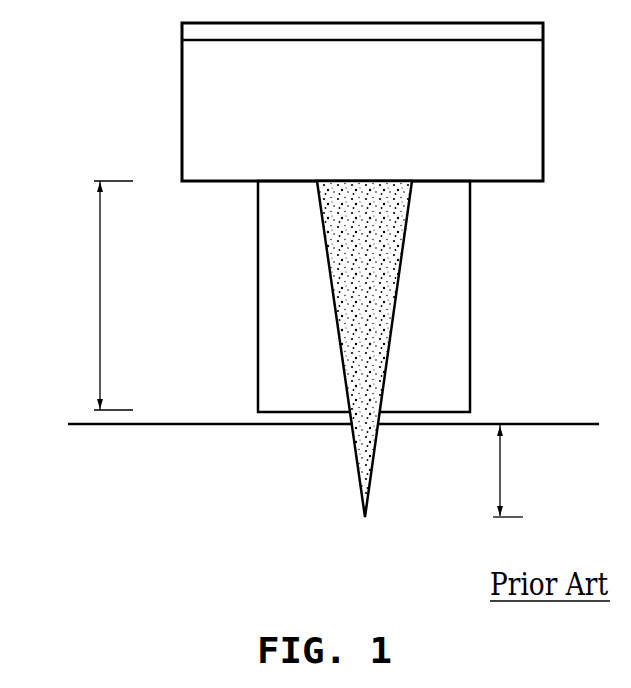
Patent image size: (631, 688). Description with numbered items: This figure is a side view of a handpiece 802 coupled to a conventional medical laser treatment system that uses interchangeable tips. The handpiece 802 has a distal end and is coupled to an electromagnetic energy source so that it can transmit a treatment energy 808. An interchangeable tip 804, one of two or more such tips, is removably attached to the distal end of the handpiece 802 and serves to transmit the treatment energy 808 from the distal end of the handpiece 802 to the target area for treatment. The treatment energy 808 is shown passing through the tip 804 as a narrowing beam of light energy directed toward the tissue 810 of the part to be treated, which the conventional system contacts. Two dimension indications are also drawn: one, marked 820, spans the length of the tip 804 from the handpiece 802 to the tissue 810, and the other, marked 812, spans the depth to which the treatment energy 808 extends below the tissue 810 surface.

The handpiece 802 is at (377, 84).
The interchangeable tip 804 is at (258, 276).
The treatment energy 808 is at (394, 292).
The tissue 810 is at (239, 482).
The penetration depth dimension 812 is at (500, 472).
The tip length dimension 820 is at (100, 333).